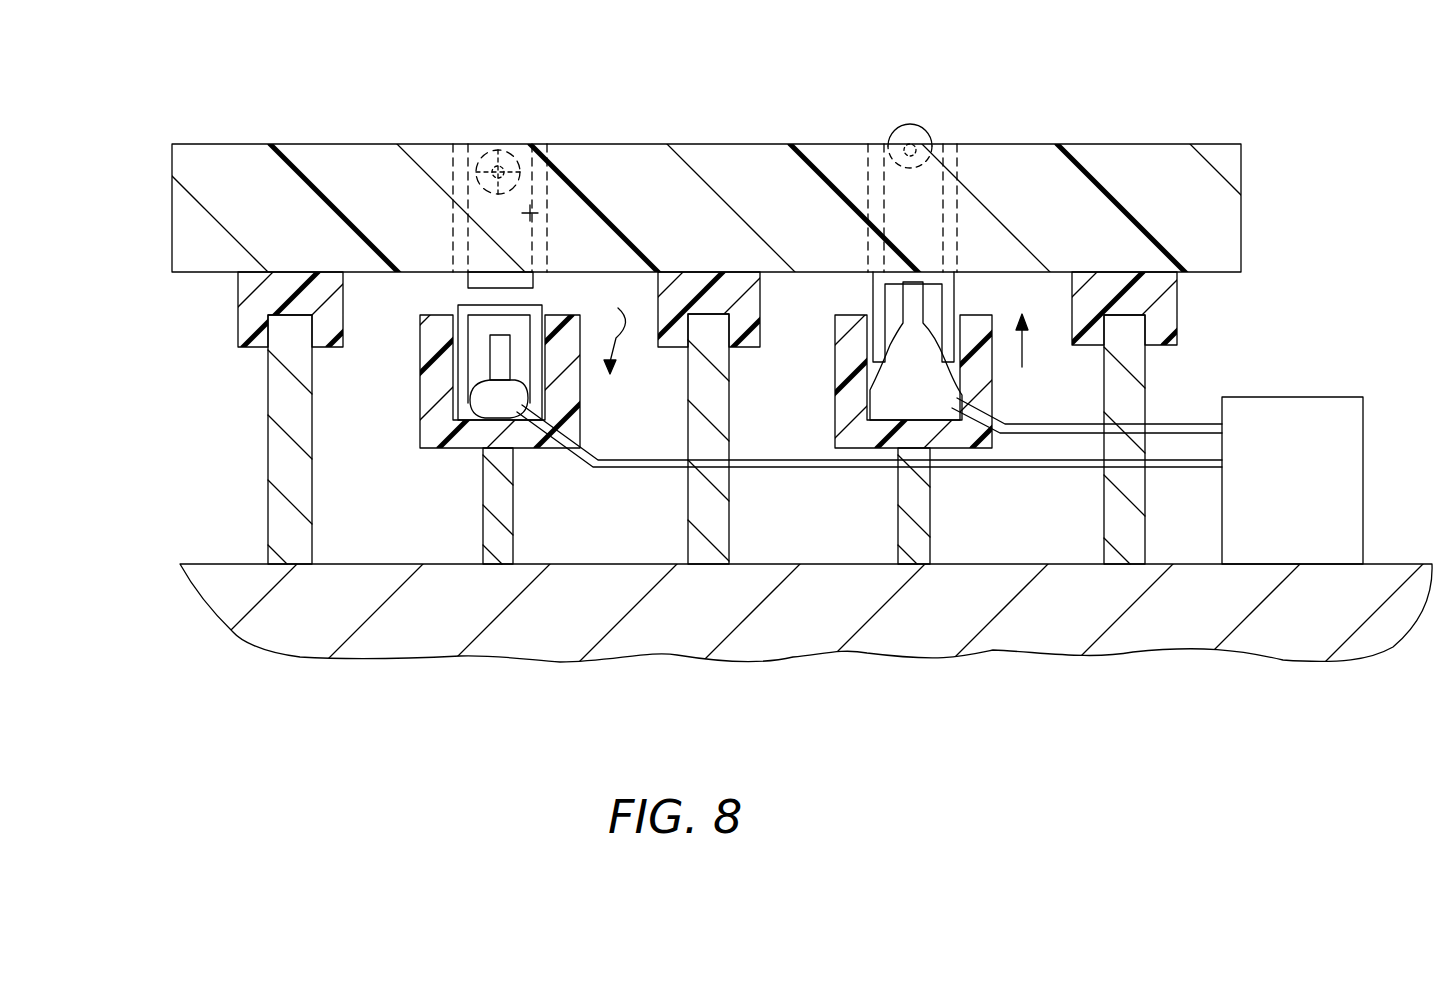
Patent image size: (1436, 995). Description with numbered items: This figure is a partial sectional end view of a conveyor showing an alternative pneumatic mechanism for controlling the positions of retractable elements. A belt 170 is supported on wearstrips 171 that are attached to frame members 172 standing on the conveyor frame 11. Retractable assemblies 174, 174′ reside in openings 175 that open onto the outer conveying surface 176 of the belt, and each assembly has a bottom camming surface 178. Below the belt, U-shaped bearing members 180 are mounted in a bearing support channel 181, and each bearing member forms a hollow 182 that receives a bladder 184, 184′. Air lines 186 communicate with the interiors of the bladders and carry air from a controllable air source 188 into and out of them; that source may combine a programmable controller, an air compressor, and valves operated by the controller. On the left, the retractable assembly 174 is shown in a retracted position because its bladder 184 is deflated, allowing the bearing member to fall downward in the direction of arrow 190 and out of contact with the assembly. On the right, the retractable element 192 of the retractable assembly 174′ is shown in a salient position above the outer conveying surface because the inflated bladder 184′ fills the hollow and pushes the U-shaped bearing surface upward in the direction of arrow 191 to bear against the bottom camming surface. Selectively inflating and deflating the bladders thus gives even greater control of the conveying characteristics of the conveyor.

The conveyor frame 11 is at (1285, 638).
The belt 170 is at (1213, 152).
The wearstrips 171 is at (238, 318).
The frame members 172 is at (268, 461).
The retractable assembly 174 is at (535, 212).
The retractable assembly 174′ is at (935, 212).
The openings 175 is at (867, 152).
The outer conveying surface 176 is at (405, 152).
The bottom camming surface 178 is at (483, 292).
The U-shaped bearing members 180 is at (458, 305).
The bearing support channel 181 is at (422, 430).
The hollow 182 is at (447, 424).
The bladder 184 is at (520, 390).
The bladder 184′ is at (880, 403).
The air lines 186 is at (608, 460).
The controllable air source 188 is at (1295, 400).
The arrow 190 is at (619, 325).
The arrow 191 is at (1022, 356).
The retractable element 192 is at (910, 134).